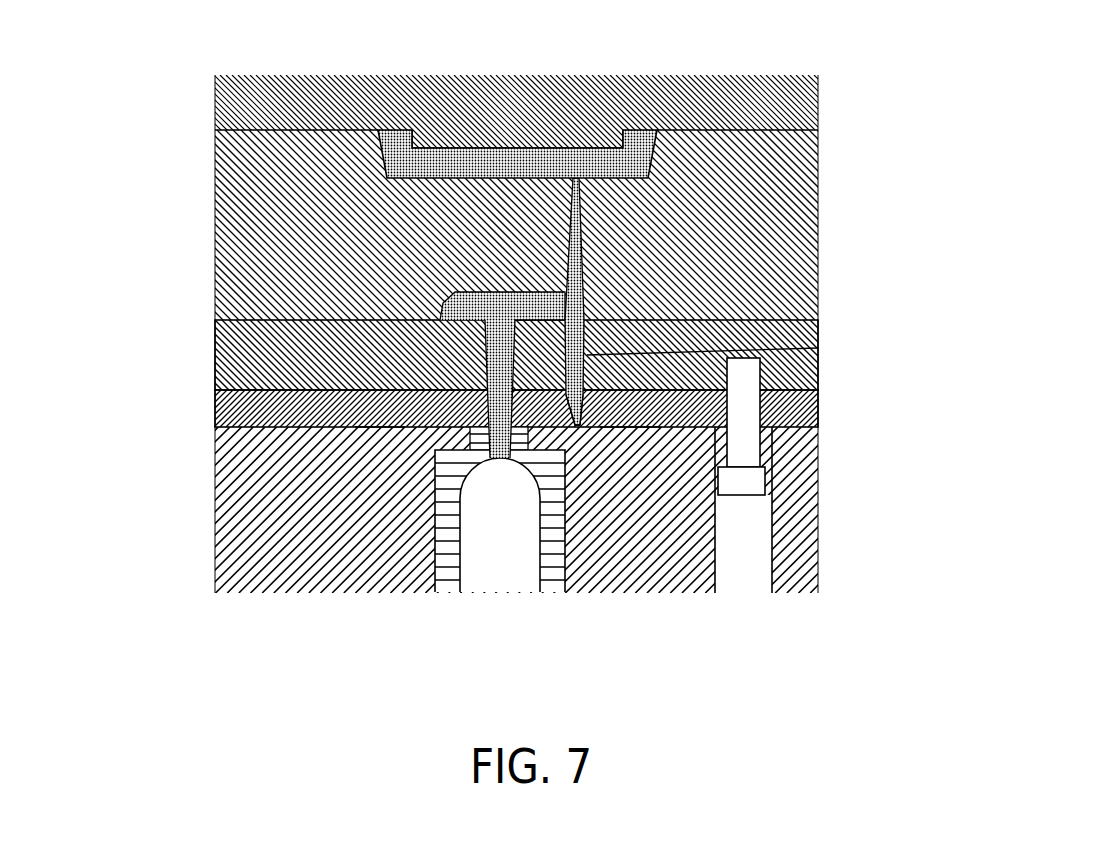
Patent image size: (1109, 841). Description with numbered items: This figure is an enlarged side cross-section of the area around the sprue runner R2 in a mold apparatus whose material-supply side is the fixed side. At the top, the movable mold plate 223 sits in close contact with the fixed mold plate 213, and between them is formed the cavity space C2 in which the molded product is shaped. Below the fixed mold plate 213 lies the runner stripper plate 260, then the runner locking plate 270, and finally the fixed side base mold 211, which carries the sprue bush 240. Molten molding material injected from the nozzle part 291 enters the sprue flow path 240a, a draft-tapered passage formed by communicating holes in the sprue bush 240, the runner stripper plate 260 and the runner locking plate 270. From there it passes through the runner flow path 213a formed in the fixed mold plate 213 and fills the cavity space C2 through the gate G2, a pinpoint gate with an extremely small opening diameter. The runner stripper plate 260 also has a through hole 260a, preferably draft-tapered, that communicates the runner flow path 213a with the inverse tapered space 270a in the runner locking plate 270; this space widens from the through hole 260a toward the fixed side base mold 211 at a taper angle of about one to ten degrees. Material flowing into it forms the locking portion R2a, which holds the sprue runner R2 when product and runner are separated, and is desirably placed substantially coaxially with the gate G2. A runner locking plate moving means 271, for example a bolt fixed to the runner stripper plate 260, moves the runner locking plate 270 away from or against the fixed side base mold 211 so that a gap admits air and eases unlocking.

The movable mold plate 223 is at (250, 107).
The fixed mold plate 213 is at (237, 225).
The runner flow path 213a is at (587, 297).
The runner stripper plate 260 is at (230, 345).
The through hole 260a is at (818, 348).
The runner locking plate 270 is at (230, 413).
The inverse tapered space 270a is at (627, 430).
The fixed side base mold 211 is at (235, 482).
The sprue bush 240 is at (553, 567).
The sprue flow path 240a is at (377, 457).
The nozzle part 291 is at (503, 573).
The runner locking plate moving means 271 is at (748, 487).
The cavity space C2 is at (440, 147).
The sprue runner R2 is at (508, 292).
The locking portion R2a is at (578, 430).
The gate G2 is at (577, 180).